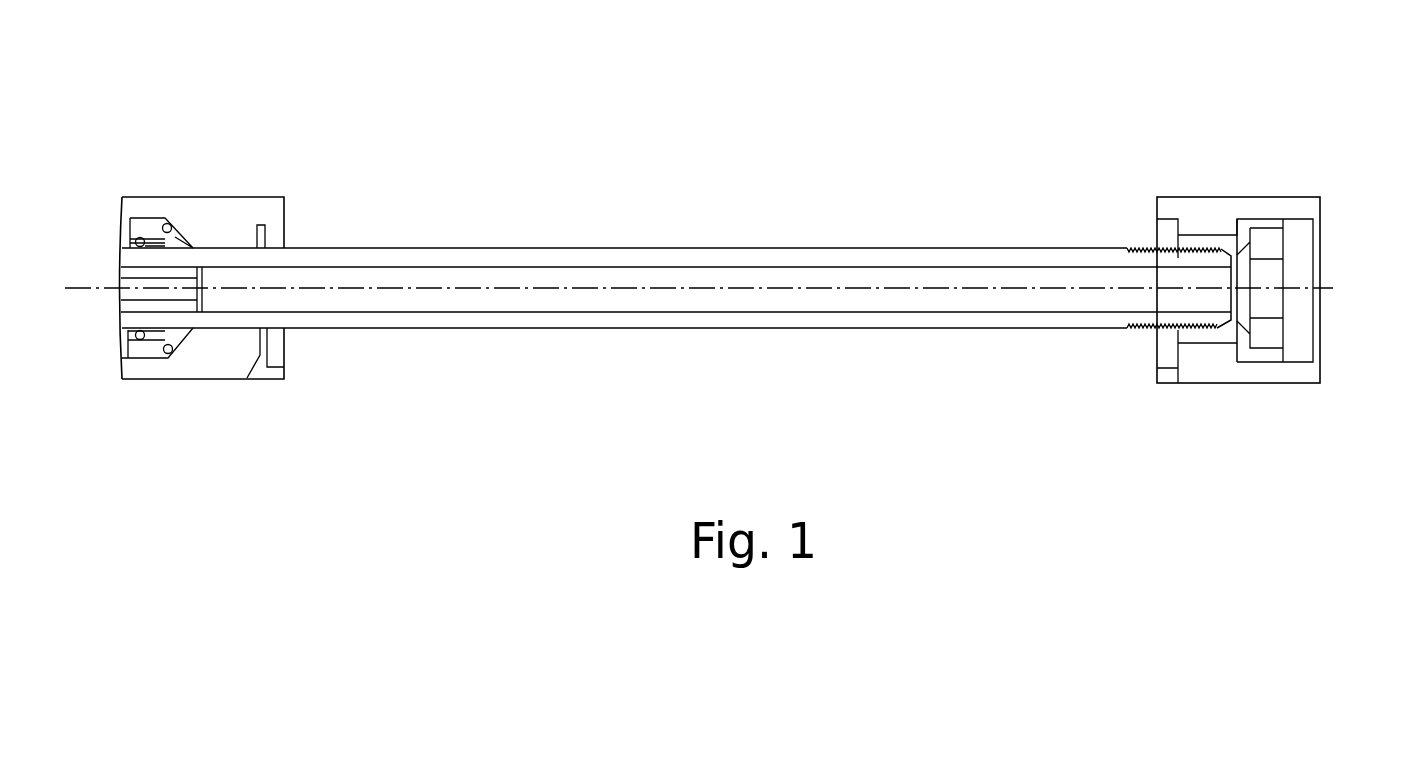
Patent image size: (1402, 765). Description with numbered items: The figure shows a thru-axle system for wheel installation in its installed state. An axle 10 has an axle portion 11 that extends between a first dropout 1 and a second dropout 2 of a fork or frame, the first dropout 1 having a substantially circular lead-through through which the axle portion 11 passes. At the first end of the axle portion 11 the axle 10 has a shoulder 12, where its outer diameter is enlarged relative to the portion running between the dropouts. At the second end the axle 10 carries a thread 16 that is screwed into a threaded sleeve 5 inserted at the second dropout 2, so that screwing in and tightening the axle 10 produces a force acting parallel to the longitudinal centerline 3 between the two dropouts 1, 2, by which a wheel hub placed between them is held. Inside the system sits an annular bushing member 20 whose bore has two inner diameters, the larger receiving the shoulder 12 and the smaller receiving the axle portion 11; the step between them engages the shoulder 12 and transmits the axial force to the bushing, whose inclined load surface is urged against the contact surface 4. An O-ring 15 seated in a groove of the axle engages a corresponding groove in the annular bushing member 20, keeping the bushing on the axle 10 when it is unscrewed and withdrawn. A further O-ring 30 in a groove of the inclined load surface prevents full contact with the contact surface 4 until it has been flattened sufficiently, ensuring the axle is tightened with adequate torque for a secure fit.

The first dropout 1 is at (263, 206).
The second dropout 2 is at (1213, 210).
The longitudinal centerline 3 is at (1328, 285).
The contact surface 4 is at (165, 249).
The threaded sleeve 5 is at (1297, 240).
The axle 10 is at (795, 163).
The axle portion 11 is at (520, 248).
The shoulder 12 is at (150, 330).
The O-ring 15 is at (137, 231).
The thread 16 is at (1137, 248).
The annular bushing member 20 is at (140, 222).
The O-ring 30 is at (168, 353).